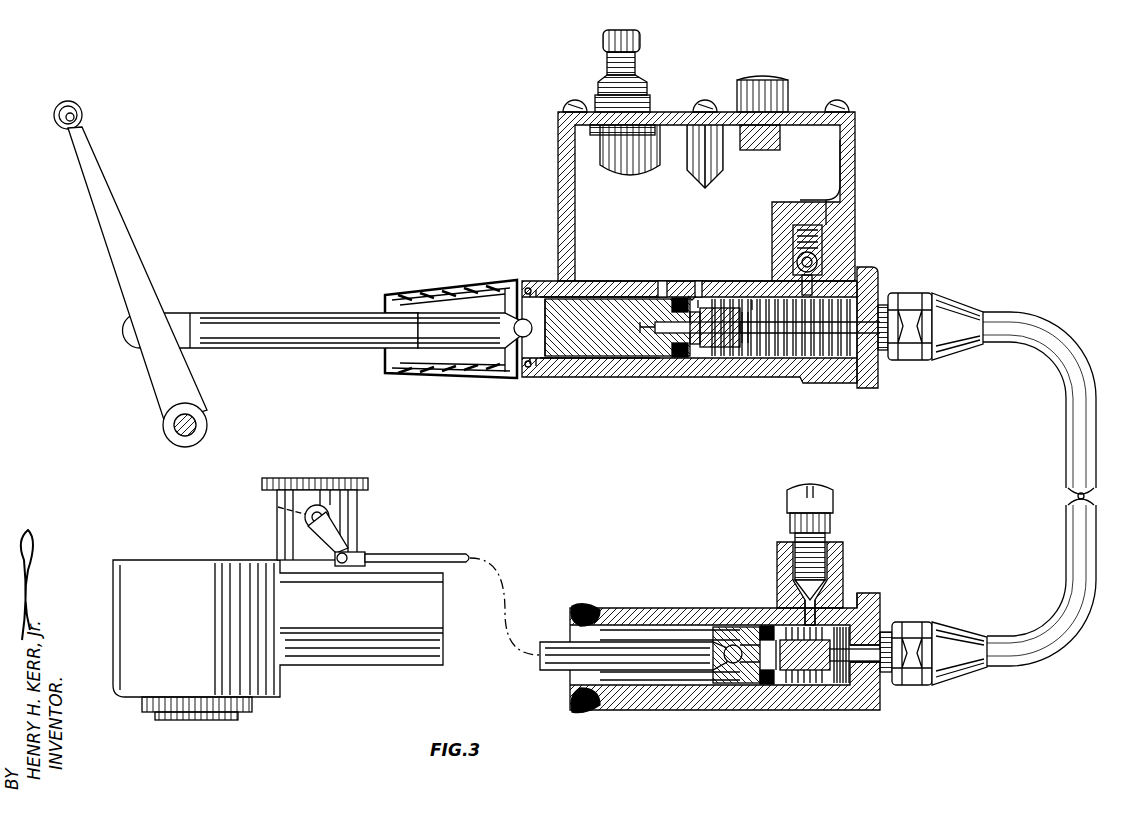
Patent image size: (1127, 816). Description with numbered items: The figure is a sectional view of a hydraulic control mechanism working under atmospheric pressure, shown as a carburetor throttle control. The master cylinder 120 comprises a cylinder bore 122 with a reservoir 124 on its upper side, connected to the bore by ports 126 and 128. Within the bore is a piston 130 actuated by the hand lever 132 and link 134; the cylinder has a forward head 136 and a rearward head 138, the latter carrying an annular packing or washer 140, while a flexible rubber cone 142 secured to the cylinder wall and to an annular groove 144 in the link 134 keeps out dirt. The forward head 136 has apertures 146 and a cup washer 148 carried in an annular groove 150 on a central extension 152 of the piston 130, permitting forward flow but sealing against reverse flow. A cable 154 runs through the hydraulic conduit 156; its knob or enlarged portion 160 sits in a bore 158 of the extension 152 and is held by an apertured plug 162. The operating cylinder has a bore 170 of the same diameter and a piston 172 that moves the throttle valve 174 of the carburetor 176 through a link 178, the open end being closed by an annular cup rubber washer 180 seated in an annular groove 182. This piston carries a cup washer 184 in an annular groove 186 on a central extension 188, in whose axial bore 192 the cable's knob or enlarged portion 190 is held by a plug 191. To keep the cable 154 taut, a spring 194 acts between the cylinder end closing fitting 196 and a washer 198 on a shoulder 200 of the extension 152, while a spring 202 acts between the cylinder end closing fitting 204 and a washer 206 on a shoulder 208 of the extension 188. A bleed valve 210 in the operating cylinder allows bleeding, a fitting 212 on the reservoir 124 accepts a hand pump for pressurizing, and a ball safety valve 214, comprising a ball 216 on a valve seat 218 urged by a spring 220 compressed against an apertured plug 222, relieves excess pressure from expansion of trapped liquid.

The master cylinder 120 is at (588, 272).
The cylinder bore 122 is at (582, 362).
The reservoir 124 is at (620, 180).
The port 126 is at (660, 283).
The port 128 is at (692, 292).
The piston 130 is at (605, 340).
The hand lever 132 is at (125, 252).
The link 134 is at (245, 330).
The forward head 136 is at (663, 280).
The rearward head 138 is at (547, 378).
The annular packing or washer 140 is at (520, 378).
The flexible rubber cone 142 is at (450, 372).
The annular groove 144 is at (383, 328).
The apertures 146 is at (680, 358).
The cup washer 148 is at (700, 352).
The annular groove 150 is at (718, 350).
The central extension 152 is at (766, 356).
The cable 154 is at (868, 300).
The hydraulic conduit 156 is at (1020, 325).
The bore 158 is at (660, 352).
The knob or enlarged portion 160 is at (668, 357).
The apertured plug 162 is at (812, 380).
The bore 170 is at (660, 672).
The piston 172 is at (720, 686).
The throttle valve 174 is at (330, 537).
The carburetor 176 is at (360, 640).
The link 178 is at (460, 556).
The annular cup rubber washer 180 is at (585, 610).
The annular groove 182 is at (625, 612).
The cup washer 184 is at (752, 690).
The annular groove 186 is at (764, 690).
The central extension 188 is at (815, 688).
The knob or enlarged portion 190 is at (770, 640).
The plug 191 is at (845, 690).
The axial bore 192 is at (752, 648).
The spring 194 is at (753, 303).
The cylinder end closing fitting 196 is at (852, 283).
The washer 198 is at (700, 300).
The shoulder 200 is at (740, 356).
The spring 202 is at (860, 598).
The cylinder end closing fitting 204 is at (875, 645).
The washer 206 is at (800, 688).
The shoulder 208 is at (805, 625).
The bleed valve 210 is at (830, 545).
The fitting 212 is at (612, 46).
The ball safety valve 214 is at (808, 290).
The ball 216 is at (850, 262).
The valve seat 218 is at (818, 280).
The spring 220 is at (835, 215).
The apertured plug 222 is at (822, 205).